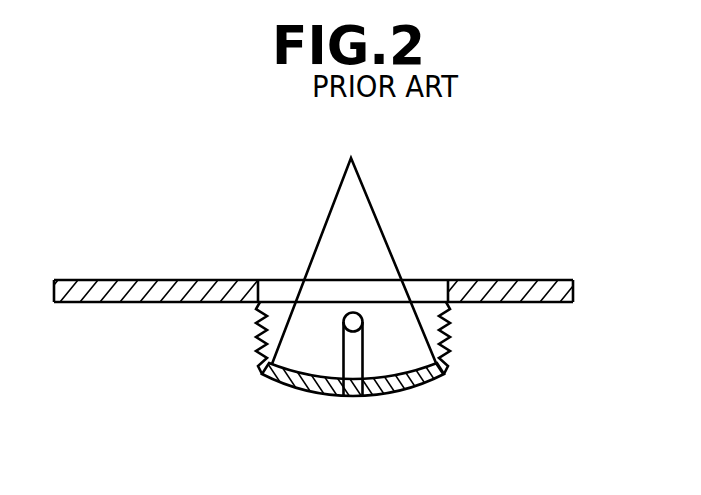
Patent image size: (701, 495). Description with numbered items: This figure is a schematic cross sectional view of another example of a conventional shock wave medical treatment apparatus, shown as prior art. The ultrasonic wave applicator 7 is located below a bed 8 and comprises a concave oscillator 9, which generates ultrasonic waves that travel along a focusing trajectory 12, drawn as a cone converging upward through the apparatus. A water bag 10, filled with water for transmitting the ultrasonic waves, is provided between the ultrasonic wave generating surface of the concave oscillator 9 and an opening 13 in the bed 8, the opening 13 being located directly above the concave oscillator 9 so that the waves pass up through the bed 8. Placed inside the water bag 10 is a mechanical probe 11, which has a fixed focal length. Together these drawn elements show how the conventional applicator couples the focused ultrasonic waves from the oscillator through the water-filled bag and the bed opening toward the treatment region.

The ultrasonic wave applicator 7 is at (258, 380).
The bed 8 is at (177, 287).
The concave oscillator 9 is at (405, 394).
The water bag 10 is at (446, 327).
The mechanical probe 11 is at (342, 348).
The focusing trajectory 12 is at (391, 248).
The opening 13 is at (438, 291).